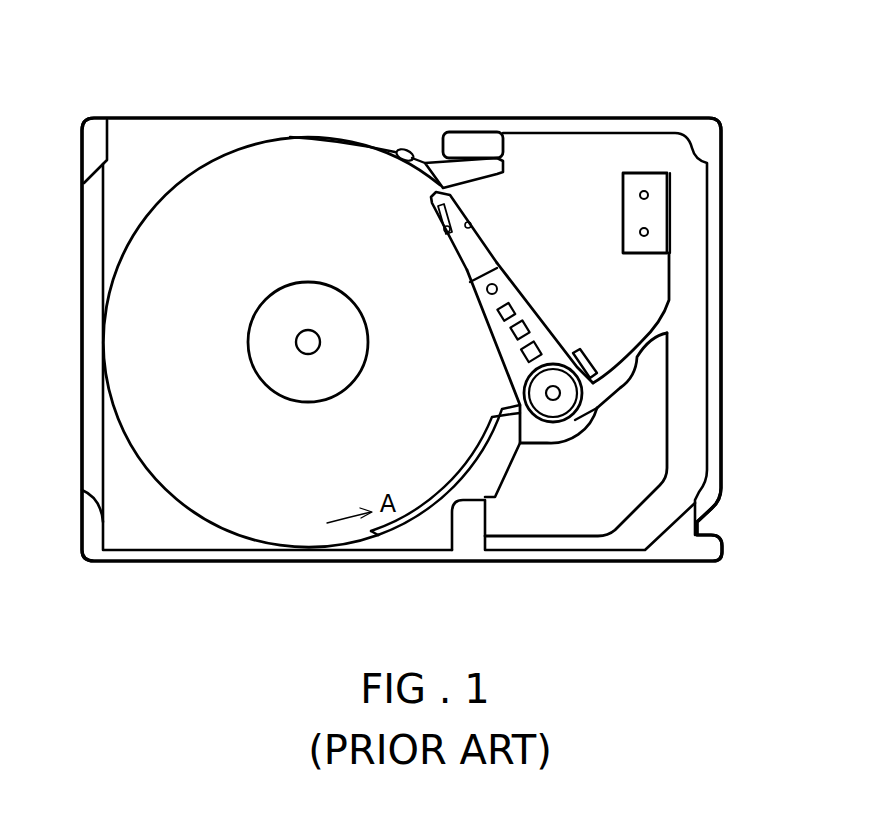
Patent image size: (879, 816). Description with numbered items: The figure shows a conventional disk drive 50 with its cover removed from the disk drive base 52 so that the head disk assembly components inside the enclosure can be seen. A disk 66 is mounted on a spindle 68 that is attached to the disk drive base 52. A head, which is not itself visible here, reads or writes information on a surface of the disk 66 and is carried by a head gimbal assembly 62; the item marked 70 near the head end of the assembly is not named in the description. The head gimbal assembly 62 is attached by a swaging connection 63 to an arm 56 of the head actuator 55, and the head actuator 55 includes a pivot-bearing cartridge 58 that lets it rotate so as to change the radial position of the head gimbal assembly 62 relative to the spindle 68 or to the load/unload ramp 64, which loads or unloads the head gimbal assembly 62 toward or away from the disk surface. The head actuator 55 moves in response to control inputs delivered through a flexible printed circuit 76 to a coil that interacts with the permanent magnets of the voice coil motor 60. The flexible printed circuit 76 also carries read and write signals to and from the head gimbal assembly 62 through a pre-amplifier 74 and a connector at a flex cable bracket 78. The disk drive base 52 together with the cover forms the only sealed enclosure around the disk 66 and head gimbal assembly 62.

The disk drive 50 is at (238, 78).
The disk drive base 52 is at (722, 358).
The head actuator 55 is at (510, 421).
The arm 56 is at (502, 336).
The pivot-bearing cartridge 58 is at (562, 393).
The voice coil motor 60 is at (628, 458).
The head gimbal assembly 62 is at (470, 262).
The swaging connection 63 is at (488, 294).
The load/unload ramp 64 is at (503, 162).
The disk 66 is at (128, 338).
The spindle 68 is at (300, 347).
The head slider 70 is at (430, 193).
The pre-amplifier 74 is at (592, 354).
The flexible printed circuit 76 is at (668, 292).
The flex cable bracket 78 is at (653, 208).